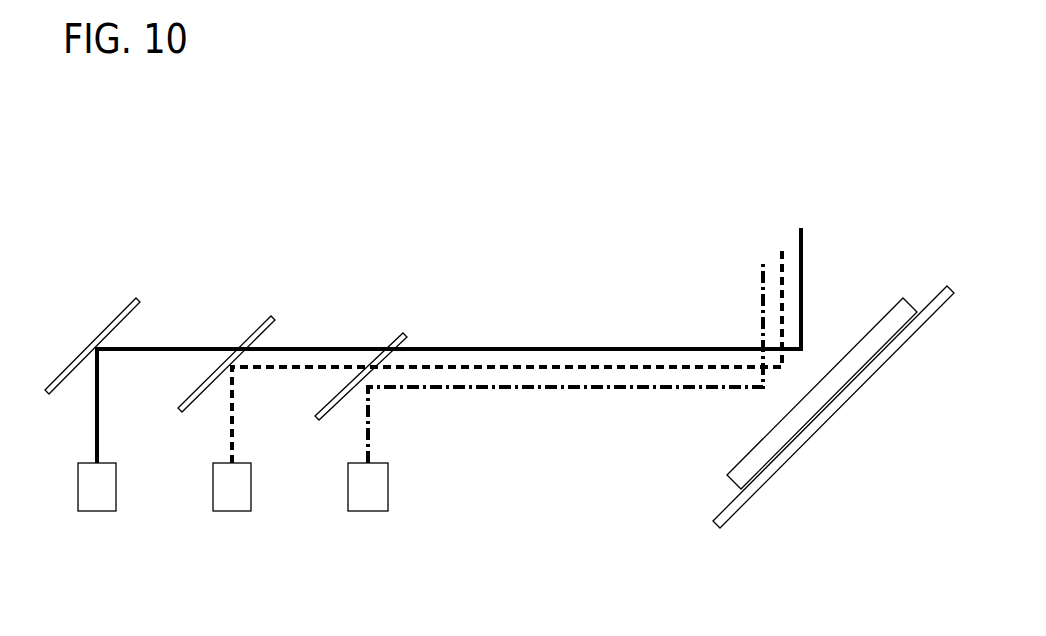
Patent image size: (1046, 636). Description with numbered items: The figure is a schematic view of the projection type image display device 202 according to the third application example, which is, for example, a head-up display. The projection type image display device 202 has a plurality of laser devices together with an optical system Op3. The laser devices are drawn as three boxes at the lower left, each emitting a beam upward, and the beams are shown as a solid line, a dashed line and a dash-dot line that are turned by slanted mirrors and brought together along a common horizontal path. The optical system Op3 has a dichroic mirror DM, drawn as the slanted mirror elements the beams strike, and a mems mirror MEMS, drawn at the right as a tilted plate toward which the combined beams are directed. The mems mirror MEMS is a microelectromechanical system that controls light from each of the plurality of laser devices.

The dichroic mirror DM is at (397, 342).
The optical system Op3 is at (758, 220).
The projection type image display device 202 is at (878, 123).
The mems mirror MEMS is at (820, 400).